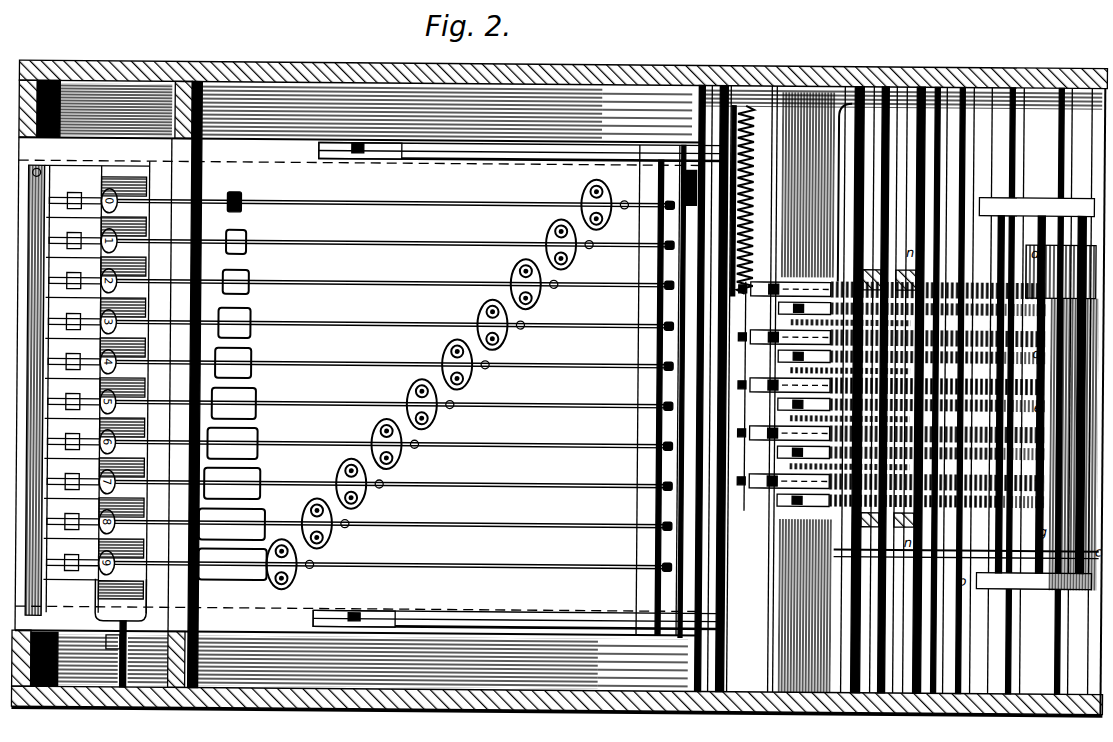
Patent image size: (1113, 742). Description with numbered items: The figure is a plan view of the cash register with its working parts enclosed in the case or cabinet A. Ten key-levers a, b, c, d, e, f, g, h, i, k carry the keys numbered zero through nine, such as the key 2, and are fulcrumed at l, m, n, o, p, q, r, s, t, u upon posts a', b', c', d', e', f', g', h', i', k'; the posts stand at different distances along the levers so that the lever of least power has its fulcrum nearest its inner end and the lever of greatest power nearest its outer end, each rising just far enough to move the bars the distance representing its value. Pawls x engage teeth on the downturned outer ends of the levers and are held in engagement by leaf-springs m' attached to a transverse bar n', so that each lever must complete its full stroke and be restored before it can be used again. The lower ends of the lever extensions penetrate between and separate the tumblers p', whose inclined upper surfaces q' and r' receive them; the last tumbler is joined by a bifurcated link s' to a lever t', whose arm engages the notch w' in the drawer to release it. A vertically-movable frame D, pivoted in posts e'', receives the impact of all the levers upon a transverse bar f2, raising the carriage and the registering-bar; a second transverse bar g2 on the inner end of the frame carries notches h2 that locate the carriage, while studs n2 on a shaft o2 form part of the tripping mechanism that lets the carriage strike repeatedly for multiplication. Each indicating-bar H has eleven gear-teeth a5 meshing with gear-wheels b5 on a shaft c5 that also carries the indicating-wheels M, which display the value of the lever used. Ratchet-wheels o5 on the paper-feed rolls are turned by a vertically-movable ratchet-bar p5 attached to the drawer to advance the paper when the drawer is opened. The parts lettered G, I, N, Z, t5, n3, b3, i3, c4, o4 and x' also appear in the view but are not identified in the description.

The case or cabinet A is at (559, 388).
The key-lever a is at (395, 198).
The key-lever b is at (395, 239).
The key-lever c is at (395, 279).
The key-lever d is at (394, 321).
The key-lever e is at (394, 361).
The key-lever f is at (394, 402).
The key-lever g is at (393, 442).
The key-lever h is at (393, 482).
The key-lever i is at (393, 522).
The key-lever k is at (392, 563).
The fulcrum l is at (583, 180).
The fulcrum m is at (549, 244).
The fulcrum n is at (514, 284).
The fulcrum o is at (480, 301).
The fulcrum p is at (446, 364).
The fulcrum q is at (411, 404).
The fulcrum r is at (375, 444).
The fulcrum s is at (340, 483).
The fulcrum t is at (306, 523).
The fulcrum u is at (271, 542).
The post a' is at (617, 219).
The post b' is at (582, 258).
The post c' is at (552, 297).
The post d' is at (519, 339).
The post e' is at (491, 378).
The post f' is at (453, 419).
The post g' is at (419, 458).
The post h' is at (387, 498).
The post i' is at (349, 538).
The post k' is at (315, 577).
The pawl x is at (74, 381).
The leaf-spring m' is at (72, 398).
The transverse bar n' is at (22, 390).
The inclined upper surface of tumbler q' is at (123, 354).
The tumbler p' is at (162, 427).
The inclined upper surface of tumbler r' is at (77, 608).
The bifurcated link s' is at (87, 639).
The stop block x' is at (98, 648).
The lever t' is at (101, 674).
The notch or recess w' is at (142, 675).
The vertically-movable frame D is at (494, 152).
The post e'' is at (357, 384).
The vertical frame G is at (700, 303).
The frame tie t5 is at (660, 172).
The transverse bar g2 is at (700, 258).
The transverse bar f2 is at (703, 393).
The stud n2 is at (703, 402).
The notch h2 is at (703, 448).
The shaft o2 is at (705, 630).
The spring n3 is at (740, 210).
The spring seat b3 is at (748, 240).
The spring guide i3 is at (750, 275).
The gear-teeth a5 is at (748, 392).
The slide bar I is at (790, 385).
The indicating-bar H is at (804, 404).
The indicating-wheel M is at (937, 387).
The type bar N is at (917, 405).
The latch Z is at (760, 306).
The shaft c5 is at (902, 193).
The gear-wheel b5 is at (818, 260).
The ratchet-wheel o5 is at (973, 550).
The post c4 is at (955, 470).
The ratchet-bar p5 is at (1040, 583).
The key 2 is at (1090, 245).
The post o4 is at (968, 272).